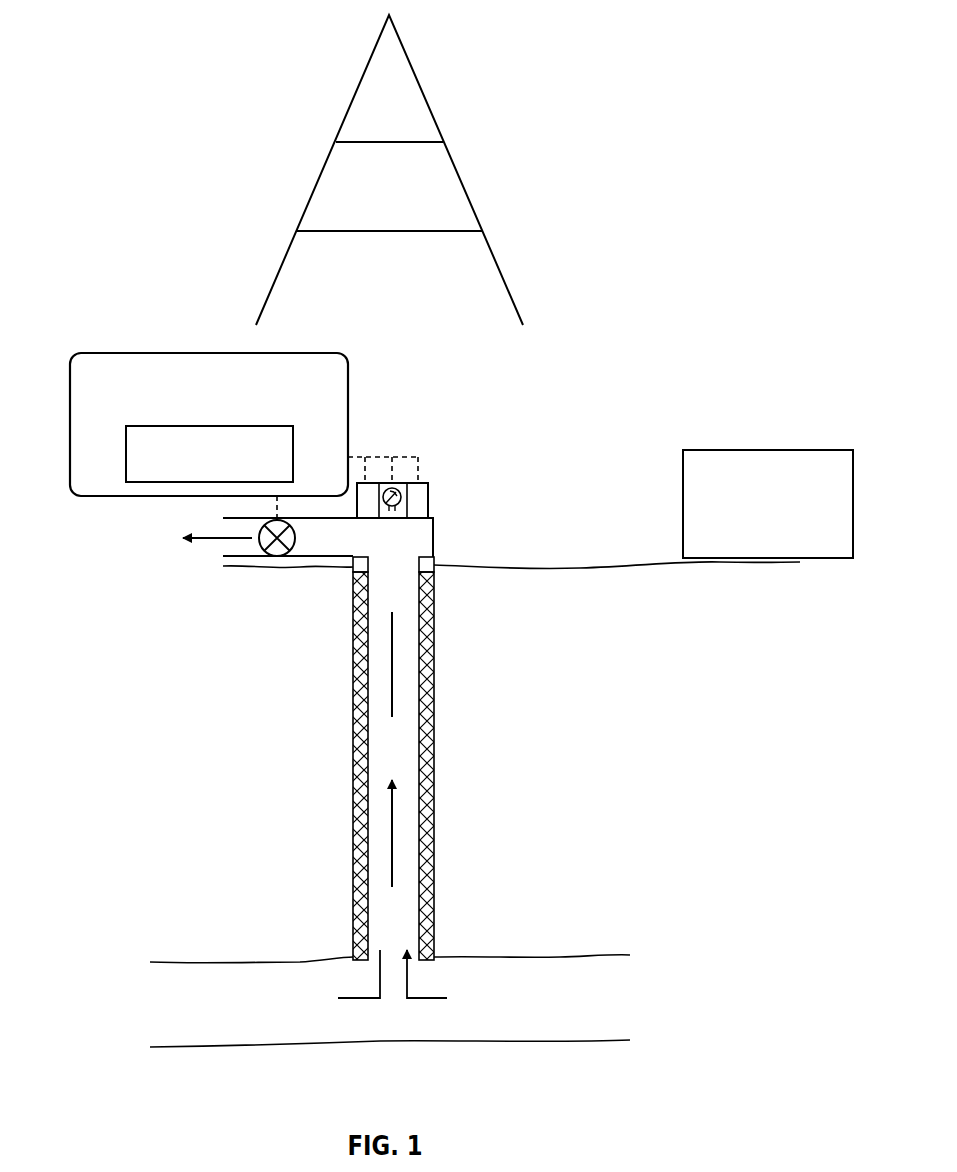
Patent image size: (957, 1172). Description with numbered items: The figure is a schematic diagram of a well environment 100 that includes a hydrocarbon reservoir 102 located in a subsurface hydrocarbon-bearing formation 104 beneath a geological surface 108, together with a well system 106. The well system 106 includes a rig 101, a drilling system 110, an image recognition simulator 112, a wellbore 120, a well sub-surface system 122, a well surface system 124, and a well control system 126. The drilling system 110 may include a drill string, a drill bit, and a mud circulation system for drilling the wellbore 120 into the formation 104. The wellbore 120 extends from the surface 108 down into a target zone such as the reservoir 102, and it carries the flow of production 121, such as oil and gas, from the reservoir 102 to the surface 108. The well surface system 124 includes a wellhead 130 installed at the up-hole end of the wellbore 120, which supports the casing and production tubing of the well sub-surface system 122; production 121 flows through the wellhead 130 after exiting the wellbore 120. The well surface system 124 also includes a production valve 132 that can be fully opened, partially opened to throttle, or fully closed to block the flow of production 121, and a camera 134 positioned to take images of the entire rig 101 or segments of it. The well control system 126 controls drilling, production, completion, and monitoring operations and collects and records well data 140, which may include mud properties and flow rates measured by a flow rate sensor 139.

The well environment 100 is at (543, 160).
The rig 101 is at (448, 50).
The hydrocarbon reservoir 102 is at (558, 1026).
The hydrocarbon-bearing formation 104 is at (681, 847).
The well system 106 is at (213, 313).
The geological surface 108 is at (550, 572).
The drilling system 110 is at (228, 166).
The image recognition simulator 112 is at (788, 450).
The wellbore 120 is at (438, 741).
The production 121 is at (201, 541).
The well sub-surface system 122 is at (329, 822).
The well surface system 124 is at (448, 431).
The well control system 126 is at (137, 352).
The wellhead 130 is at (439, 563).
The production valve 132 is at (277, 557).
The camera 134 is at (436, 497).
The flow rate sensor 139 is at (375, 483).
The well data 140 is at (189, 425).